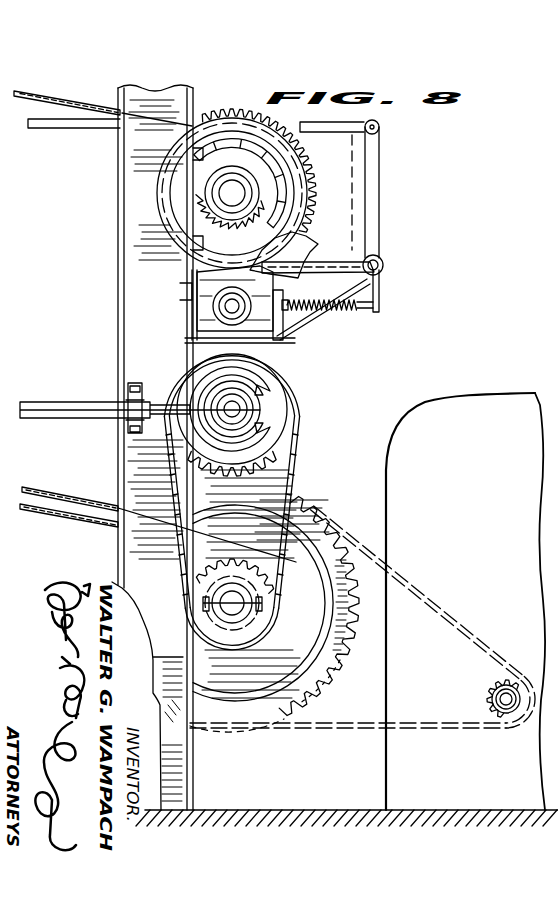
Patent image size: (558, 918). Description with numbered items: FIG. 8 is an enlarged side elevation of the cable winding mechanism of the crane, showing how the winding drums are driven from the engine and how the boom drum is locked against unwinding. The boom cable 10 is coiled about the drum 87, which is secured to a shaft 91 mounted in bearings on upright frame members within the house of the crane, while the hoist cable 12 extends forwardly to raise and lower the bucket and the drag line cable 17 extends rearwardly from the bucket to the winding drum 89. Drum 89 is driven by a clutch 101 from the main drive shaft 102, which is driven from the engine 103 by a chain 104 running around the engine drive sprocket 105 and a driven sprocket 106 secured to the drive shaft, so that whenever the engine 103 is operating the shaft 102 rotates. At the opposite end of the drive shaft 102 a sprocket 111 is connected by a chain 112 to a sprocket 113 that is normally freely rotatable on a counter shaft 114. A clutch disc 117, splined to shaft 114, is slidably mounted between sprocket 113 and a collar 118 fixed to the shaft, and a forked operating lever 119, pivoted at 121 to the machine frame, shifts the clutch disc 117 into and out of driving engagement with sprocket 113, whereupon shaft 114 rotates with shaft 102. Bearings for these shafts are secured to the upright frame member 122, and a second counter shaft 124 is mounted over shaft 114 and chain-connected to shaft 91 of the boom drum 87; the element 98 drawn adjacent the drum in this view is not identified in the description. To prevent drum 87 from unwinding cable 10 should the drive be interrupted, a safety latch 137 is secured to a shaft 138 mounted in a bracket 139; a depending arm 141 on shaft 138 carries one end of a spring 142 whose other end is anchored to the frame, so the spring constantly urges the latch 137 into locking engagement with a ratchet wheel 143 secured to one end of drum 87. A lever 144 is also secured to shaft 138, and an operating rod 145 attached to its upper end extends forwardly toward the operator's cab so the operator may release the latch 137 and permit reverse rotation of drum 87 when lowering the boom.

The boom cable 10 is at (48, 96).
The hoist cable 12 is at (45, 489).
The drag line cable 17 is at (40, 513).
The drum 87 is at (292, 194).
The drum 89 is at (293, 621).
The shaft 91 is at (230, 196).
The drum 98 is at (158, 215).
The clutch 101 is at (338, 580).
The main drive shaft 102 is at (236, 607).
The engine 103 is at (460, 601).
The chain 104 is at (344, 546).
The engine drive sprocket 105 is at (482, 686).
The driven sprocket 106 is at (331, 686).
The sprocket 111 is at (258, 590).
The chain 112 is at (300, 480).
The sprocket 113 is at (306, 452).
The counter shaft 114 is at (300, 418).
The clutch disc 117 is at (300, 468).
The collar 118 is at (546, 588).
The forked operating lever 119 is at (95, 417).
The pivot 121 is at (136, 382).
The upright frame member 122 is at (130, 160).
The second counter shaft 124 is at (187, 302).
The safety latch 137 is at (318, 262).
The shaft 138 is at (385, 262).
The bracket 139 is at (302, 322).
The depending arm 141 is at (381, 292).
The spring 142 is at (345, 310).
The ratchet wheel 143 is at (312, 186).
The lever 144 is at (376, 184).
The operating rod 145 is at (318, 130).